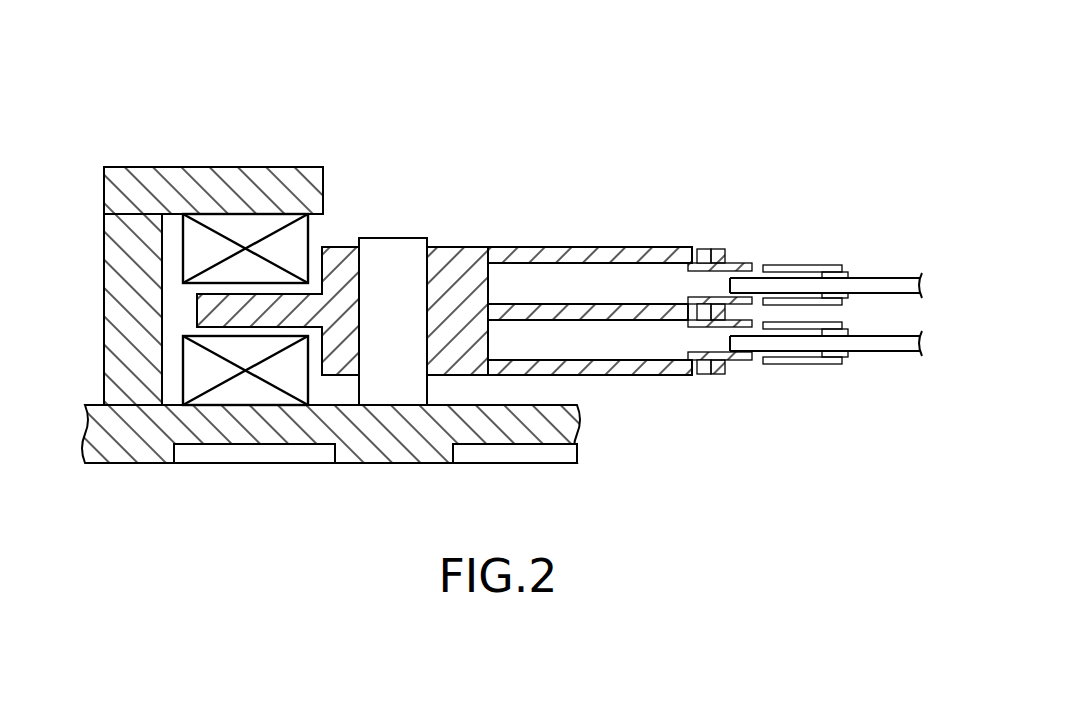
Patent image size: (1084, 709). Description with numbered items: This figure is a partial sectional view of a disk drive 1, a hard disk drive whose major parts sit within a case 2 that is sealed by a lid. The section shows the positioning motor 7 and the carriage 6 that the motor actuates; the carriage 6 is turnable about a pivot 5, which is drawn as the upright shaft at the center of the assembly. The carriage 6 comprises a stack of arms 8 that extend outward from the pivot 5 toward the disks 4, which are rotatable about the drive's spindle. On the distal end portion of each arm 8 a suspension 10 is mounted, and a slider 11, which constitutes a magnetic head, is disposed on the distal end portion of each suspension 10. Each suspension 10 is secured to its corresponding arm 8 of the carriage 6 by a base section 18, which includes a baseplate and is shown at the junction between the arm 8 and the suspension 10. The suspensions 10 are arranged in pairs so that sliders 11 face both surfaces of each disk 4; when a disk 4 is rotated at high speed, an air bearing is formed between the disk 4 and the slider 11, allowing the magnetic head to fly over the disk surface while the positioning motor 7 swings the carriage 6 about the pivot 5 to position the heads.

The disk drive 1 is at (266, 122).
The case 2 is at (148, 465).
The disk 4 is at (903, 279).
The pivot 5 is at (397, 247).
The carriage 6 is at (548, 247).
The positioning motor 7 is at (243, 393).
The arm 8 is at (650, 247).
The suspension 10 is at (806, 298).
The slider 11 is at (848, 272).
The base section 18 is at (735, 262).